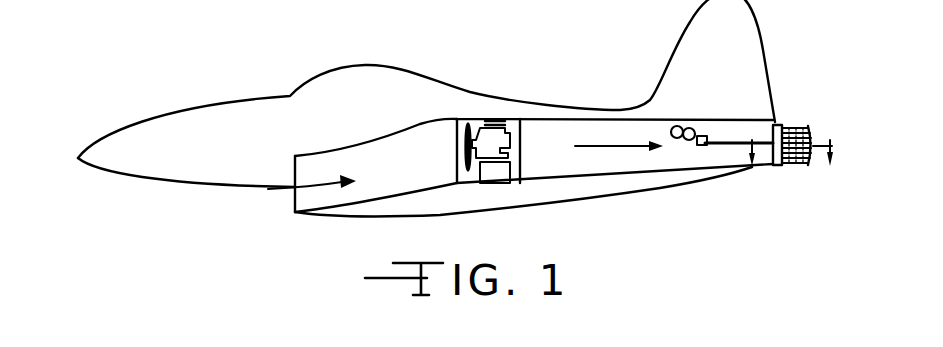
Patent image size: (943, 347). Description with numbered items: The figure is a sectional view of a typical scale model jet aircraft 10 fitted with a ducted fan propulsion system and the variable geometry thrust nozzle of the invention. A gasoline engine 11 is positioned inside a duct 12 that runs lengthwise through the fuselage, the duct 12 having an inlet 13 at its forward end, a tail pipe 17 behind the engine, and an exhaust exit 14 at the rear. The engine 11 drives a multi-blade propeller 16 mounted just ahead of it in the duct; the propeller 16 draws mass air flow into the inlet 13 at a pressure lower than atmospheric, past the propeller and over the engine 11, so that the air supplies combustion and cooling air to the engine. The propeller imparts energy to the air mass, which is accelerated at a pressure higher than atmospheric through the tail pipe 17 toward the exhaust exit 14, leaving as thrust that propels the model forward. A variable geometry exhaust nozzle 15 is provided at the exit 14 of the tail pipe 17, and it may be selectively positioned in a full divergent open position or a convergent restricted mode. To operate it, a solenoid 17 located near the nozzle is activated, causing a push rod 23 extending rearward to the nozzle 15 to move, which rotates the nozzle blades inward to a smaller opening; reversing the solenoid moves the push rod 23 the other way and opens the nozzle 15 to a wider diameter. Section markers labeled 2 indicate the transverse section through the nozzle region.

The scale model jet aircraft 10 is at (295, 75).
The gasoline engine 11 is at (510, 143).
The duct 12 is at (418, 177).
The inlet 13 is at (293, 196).
The exhaust exit 14 is at (808, 138).
The variable geometry exhaust nozzle 15 is at (790, 126).
The multi-blade propeller 16 is at (468, 130).
The solenoid 17 is at (678, 125).
The push rod 23 is at (735, 143).
The section line 2- 2 is at (799, 168).